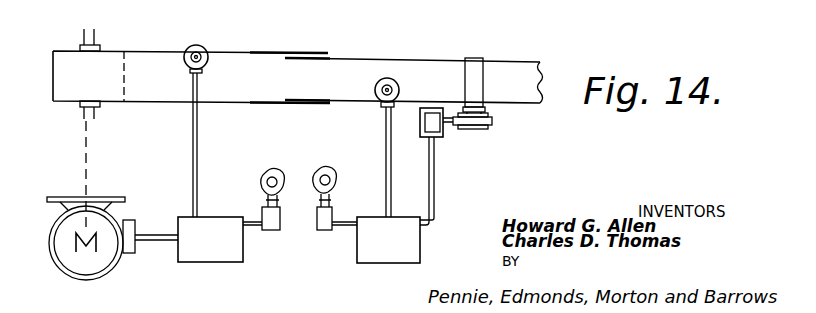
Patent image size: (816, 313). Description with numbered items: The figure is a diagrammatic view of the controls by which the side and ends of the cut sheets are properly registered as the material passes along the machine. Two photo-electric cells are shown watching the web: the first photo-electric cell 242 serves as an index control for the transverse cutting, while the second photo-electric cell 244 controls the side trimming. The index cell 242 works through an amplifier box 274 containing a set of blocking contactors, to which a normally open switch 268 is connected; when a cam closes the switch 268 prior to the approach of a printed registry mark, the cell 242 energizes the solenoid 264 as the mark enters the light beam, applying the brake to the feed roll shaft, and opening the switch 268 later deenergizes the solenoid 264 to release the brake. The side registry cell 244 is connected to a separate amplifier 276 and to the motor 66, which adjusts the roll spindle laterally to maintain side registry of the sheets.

The motor 66 is at (70, 263).
The photo-electric cell 242 is at (389, 78).
The photo-electric cell 244 is at (208, 34).
The solenoid 264 is at (437, 131).
The switch 268 is at (327, 231).
The amplifier box 274 is at (372, 217).
The amplifier 276 is at (214, 256).